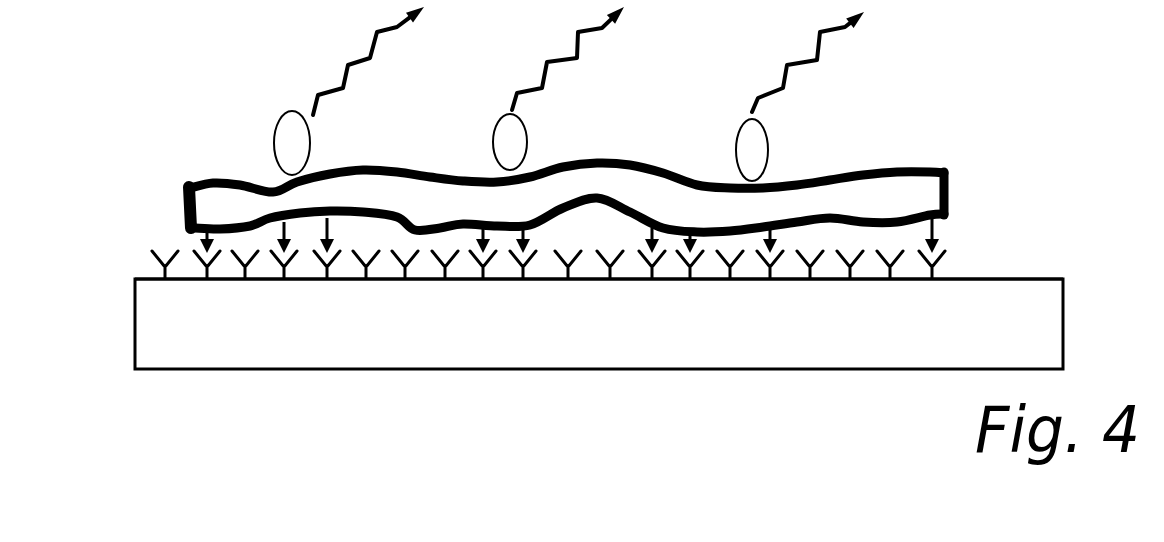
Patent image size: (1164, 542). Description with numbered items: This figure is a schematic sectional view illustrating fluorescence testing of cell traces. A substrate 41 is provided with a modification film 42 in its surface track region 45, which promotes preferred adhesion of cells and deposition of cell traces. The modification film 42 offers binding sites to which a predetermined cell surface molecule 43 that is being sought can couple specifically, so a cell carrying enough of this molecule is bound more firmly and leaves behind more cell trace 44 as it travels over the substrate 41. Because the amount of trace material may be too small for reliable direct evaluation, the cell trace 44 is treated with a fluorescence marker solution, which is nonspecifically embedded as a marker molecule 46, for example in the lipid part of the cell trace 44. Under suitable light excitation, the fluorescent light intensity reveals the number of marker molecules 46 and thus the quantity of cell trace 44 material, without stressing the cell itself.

The substrate 41 is at (878, 357).
The modification film 42 is at (943, 264).
The cell surface molecule 43 is at (937, 228).
The cell trace 44 is at (885, 200).
The surface track region 45 is at (991, 278).
The marker molecule 46 is at (753, 155).